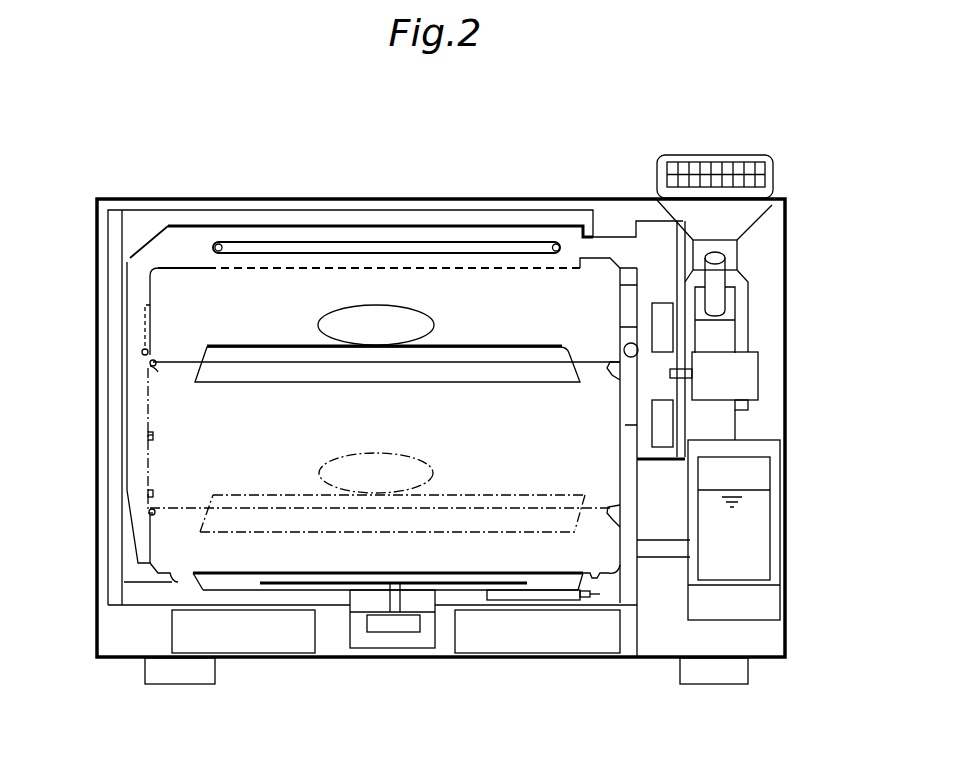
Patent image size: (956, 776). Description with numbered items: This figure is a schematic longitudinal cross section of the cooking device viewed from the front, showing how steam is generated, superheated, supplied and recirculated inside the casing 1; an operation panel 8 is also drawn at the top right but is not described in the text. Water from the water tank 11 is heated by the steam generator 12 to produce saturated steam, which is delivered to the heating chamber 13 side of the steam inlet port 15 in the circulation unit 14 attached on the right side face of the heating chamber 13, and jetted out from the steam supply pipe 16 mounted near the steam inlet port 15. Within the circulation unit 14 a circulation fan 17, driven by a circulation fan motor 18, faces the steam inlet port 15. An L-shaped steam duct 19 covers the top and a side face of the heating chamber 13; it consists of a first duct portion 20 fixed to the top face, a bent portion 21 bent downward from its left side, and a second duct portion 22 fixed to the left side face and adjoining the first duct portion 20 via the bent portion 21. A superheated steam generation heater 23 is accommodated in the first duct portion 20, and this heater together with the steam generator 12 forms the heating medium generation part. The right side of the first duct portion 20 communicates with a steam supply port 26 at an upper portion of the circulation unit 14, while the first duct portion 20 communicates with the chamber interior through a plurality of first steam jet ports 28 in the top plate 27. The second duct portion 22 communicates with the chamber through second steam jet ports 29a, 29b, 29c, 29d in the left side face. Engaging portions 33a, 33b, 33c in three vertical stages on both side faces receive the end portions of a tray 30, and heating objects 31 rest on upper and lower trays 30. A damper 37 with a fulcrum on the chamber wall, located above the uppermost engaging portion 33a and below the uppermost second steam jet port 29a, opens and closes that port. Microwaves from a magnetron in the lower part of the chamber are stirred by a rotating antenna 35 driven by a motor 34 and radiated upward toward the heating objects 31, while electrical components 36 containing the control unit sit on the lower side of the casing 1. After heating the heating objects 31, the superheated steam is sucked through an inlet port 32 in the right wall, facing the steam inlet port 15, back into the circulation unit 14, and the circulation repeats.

The casing 1 is at (411, 197).
The operation panel 8 is at (712, 154).
The water tank 11 is at (752, 549).
The steam generator 12 is at (770, 441).
The heating chamber 13 is at (172, 288).
The circulation unit 14 is at (638, 212).
The steam inlet port 15 is at (640, 406).
The steam supply pipe 16 is at (624, 345).
The circulation fan 17 is at (662, 303).
The circulation fan motor 18 is at (758, 372).
The steam duct 19 is at (160, 218).
The first duct portion 20 is at (300, 224).
The bent portion 21 is at (143, 245).
The second duct portion 22 is at (126, 357).
The superheated steam generation heater 23 is at (480, 243).
The steam supply port 26 is at (635, 237).
The top plate 27 is at (200, 273).
The first steam jet ports 28 is at (284, 271).
The second steam jet port 29a is at (153, 327).
The second steam jet port 29b is at (148, 410).
The second steam jet port 29c is at (148, 491).
The second steam jet port 29d is at (150, 546).
The tray 30 is at (462, 384).
The heating object 31 is at (393, 302).
The inlet port 32 is at (620, 403).
The engaging portion 33a is at (160, 372).
The engaging portion 33b is at (150, 437).
The engaging portion 33c is at (152, 515).
The motor 34 is at (385, 626).
The rotating antenna 35 is at (478, 584).
The electrical components 36 is at (560, 642).
The damper 37 is at (145, 348).